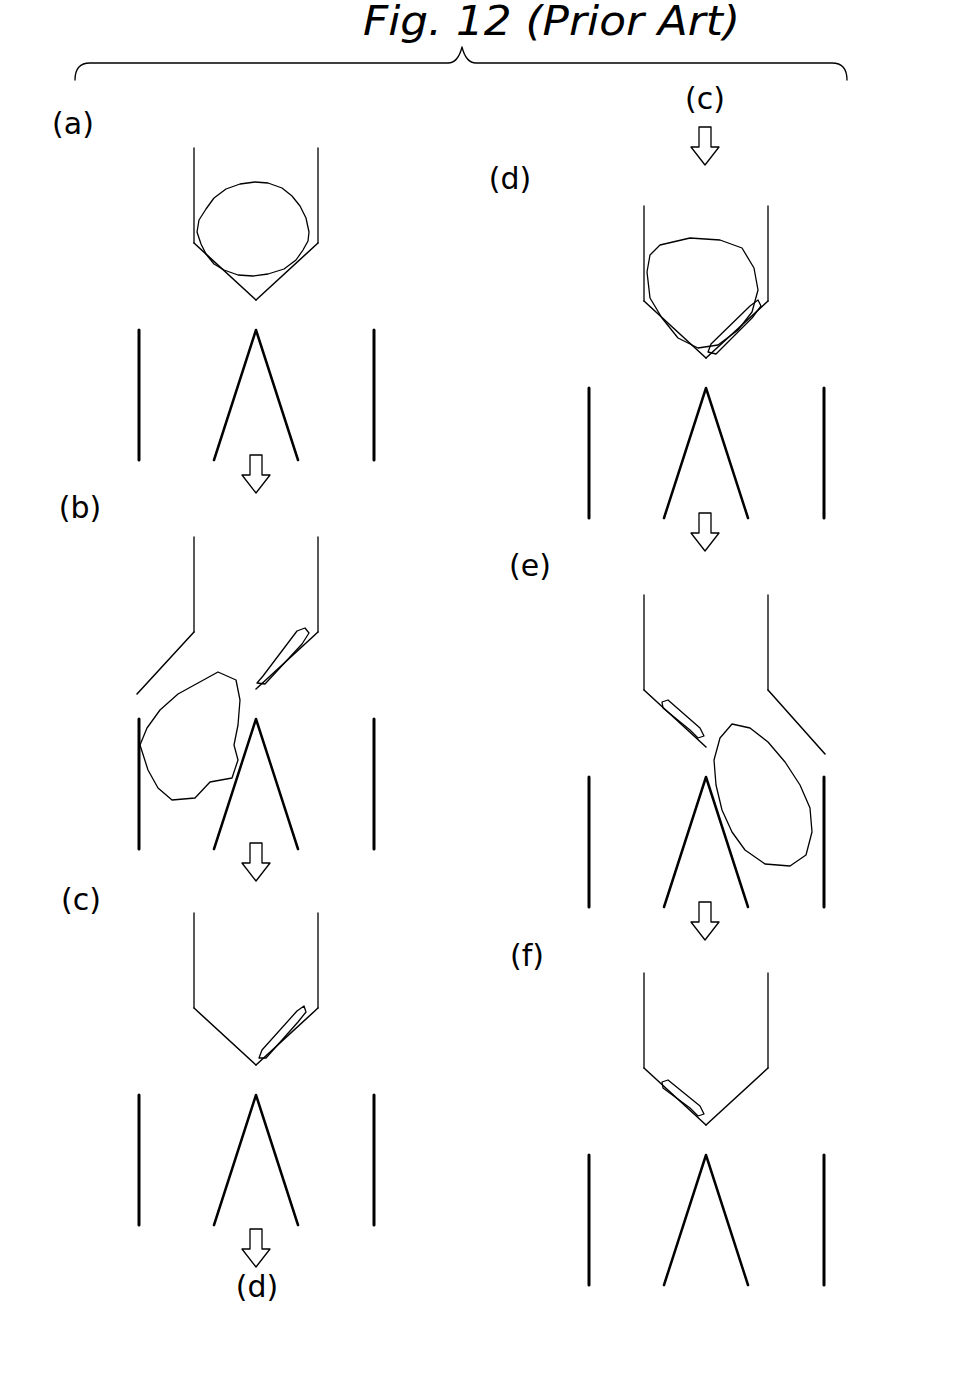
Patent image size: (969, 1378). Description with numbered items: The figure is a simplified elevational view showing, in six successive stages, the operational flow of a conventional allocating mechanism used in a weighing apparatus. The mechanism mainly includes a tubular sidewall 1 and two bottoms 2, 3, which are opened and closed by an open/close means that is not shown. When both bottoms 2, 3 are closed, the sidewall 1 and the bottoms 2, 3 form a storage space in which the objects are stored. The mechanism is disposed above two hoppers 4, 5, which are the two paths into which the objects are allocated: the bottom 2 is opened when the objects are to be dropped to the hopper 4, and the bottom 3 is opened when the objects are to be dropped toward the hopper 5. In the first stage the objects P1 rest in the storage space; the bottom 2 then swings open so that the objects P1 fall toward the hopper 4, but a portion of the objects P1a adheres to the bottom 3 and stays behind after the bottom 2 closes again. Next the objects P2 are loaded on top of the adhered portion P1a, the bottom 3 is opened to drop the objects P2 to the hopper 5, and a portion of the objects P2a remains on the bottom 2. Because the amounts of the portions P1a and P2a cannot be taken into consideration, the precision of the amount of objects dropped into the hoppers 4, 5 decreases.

The tubular sidewall 1 is at (318, 193).
The bottom 2 is at (206, 256).
The bottom 3 is at (306, 256).
The hopper 4 is at (139, 378).
The hopper 5 is at (374, 372).
The objects P1 is at (228, 208).
The portion of the objects P1a is at (298, 643).
The objects P2 is at (679, 262).
The portion of the objects P2a is at (677, 707).